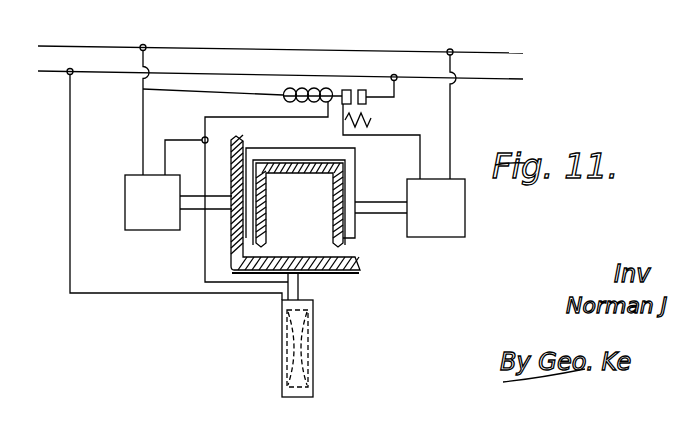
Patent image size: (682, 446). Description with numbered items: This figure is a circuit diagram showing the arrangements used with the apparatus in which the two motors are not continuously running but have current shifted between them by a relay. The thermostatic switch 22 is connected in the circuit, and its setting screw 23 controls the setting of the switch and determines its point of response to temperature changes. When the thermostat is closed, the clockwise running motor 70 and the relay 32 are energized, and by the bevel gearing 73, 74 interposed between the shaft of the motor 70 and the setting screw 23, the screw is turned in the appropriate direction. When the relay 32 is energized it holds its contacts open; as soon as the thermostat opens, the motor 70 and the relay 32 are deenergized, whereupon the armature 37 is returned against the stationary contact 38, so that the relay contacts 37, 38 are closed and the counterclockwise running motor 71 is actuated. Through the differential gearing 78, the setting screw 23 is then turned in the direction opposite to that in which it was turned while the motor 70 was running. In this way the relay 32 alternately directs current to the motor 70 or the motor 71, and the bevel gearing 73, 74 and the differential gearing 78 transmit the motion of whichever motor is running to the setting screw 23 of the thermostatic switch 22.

The thermostatic switch 22 is at (313, 366).
The setting screw 23 is at (299, 284).
The relay 32 is at (305, 89).
The armature 37 is at (347, 91).
The stationary contact 38 is at (364, 91).
The clockwise running motor 70 is at (150, 218).
The counterclockwise running motor 71 is at (440, 222).
The bevel gear 73 is at (232, 247).
The bevel gear 74 is at (267, 270).
The differential gearing 78 is at (311, 227).